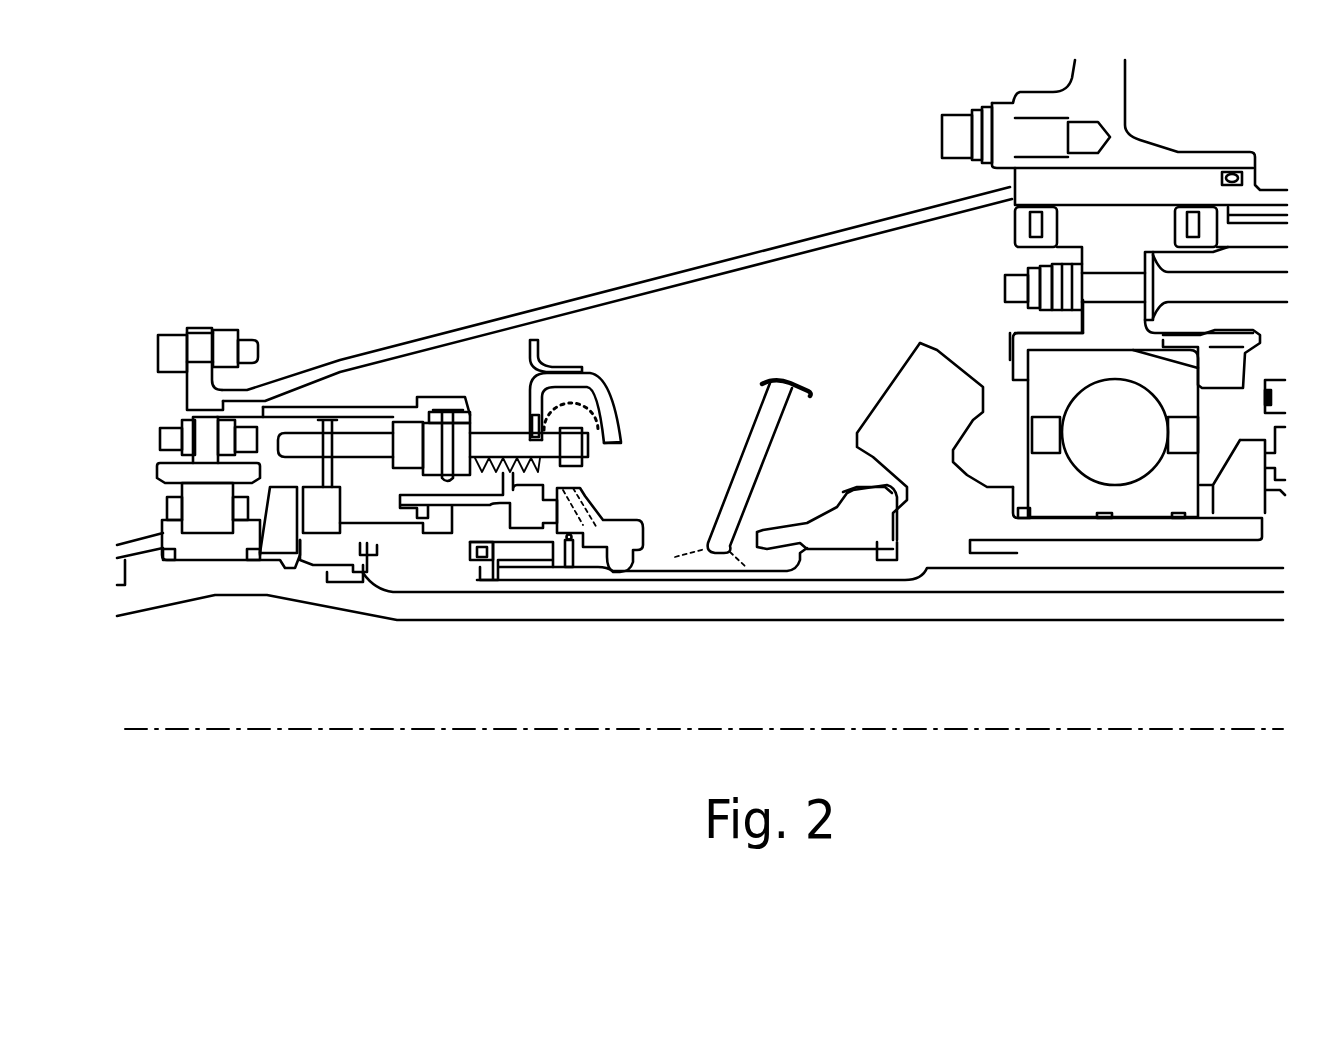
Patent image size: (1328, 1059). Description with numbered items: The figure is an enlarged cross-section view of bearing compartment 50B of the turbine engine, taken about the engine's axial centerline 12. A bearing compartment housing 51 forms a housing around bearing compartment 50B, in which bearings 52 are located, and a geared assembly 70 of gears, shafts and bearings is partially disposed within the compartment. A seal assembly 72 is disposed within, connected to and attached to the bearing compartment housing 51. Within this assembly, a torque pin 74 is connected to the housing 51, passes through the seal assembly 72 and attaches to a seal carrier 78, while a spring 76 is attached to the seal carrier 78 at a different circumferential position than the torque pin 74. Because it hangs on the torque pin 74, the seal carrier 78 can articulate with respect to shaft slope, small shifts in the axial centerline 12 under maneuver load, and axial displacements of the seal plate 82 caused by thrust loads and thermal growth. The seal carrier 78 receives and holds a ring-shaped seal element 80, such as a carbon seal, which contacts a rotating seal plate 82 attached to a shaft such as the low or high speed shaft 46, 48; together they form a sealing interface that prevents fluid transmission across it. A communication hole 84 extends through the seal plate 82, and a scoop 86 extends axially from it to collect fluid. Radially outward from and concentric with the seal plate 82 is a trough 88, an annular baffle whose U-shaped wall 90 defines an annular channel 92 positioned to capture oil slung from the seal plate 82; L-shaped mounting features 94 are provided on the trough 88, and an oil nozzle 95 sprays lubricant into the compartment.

The axial centerline 12 is at (253, 730).
The low speed shaft 46 is at (1180, 618).
The high speed shaft 48 is at (1113, 570).
The bearing compartment 50B is at (454, 178).
The bearing compartment housing 51 is at (673, 272).
The bearings 52 is at (1071, 507).
The geared assembly 70 is at (883, 367).
The seal assembly 72 is at (436, 388).
The torque pin 74 is at (507, 421).
The spring 76 is at (495, 440).
The seal carrier 78 is at (461, 513).
The seal element 80 is at (537, 505).
The seal plate 82 is at (645, 510).
The communication hole 84 is at (597, 522).
The scoop 86 is at (627, 570).
The trough 88 is at (625, 402).
The wall 90 is at (620, 435).
The annular channel 92 is at (593, 380).
The mounting features 94 is at (540, 346).
The oil nozzle 95 is at (783, 440).